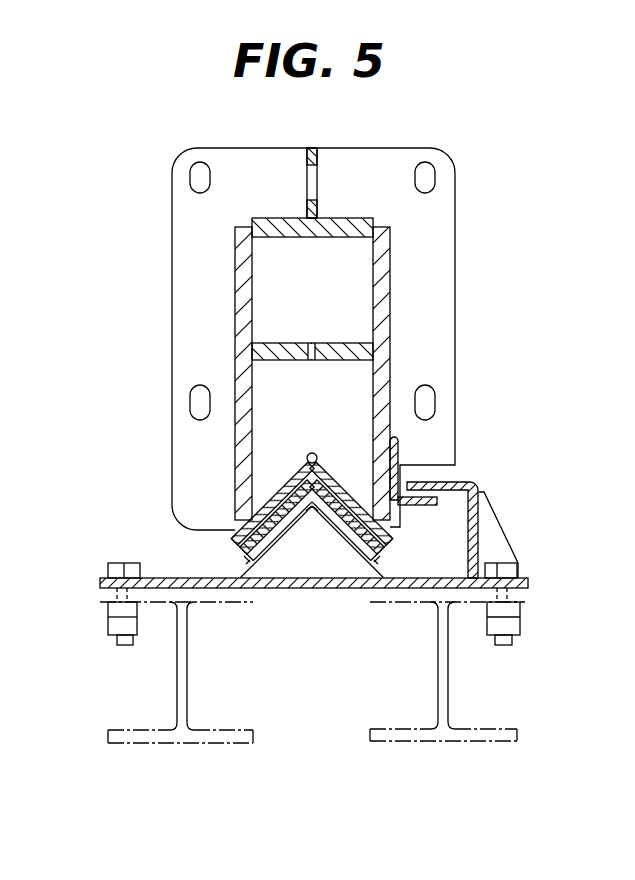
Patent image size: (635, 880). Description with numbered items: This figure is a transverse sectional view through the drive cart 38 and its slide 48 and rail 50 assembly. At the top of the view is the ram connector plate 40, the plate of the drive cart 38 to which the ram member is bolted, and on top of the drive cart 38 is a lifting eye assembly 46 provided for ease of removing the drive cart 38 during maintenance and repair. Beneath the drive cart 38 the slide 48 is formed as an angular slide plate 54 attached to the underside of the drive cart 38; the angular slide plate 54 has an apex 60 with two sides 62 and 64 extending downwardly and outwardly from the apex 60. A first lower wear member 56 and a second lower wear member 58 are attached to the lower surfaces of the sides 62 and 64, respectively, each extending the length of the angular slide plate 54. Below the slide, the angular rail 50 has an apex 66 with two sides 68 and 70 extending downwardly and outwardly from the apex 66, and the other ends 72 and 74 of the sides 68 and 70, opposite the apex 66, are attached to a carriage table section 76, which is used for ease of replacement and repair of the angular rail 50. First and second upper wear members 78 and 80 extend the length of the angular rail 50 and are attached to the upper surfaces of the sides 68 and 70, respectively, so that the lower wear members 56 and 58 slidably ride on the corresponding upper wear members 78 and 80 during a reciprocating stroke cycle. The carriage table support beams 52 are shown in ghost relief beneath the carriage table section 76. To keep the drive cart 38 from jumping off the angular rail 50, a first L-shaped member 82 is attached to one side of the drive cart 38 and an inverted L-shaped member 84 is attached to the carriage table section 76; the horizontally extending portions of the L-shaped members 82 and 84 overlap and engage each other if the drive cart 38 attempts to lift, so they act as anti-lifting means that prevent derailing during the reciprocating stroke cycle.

The drive cart 38 is at (392, 274).
The ram connector plate 40 is at (399, 150).
The lifting eye assembly 46 is at (318, 162).
The slide 48 is at (337, 462).
The angular rail 50 is at (329, 553).
The carriage table support beams 52 is at (214, 744).
The angular slide plate 54 is at (300, 490).
The first lower wear member 56 is at (235, 558).
The second lower wear member 58 is at (400, 555).
The apex 60 is at (305, 466).
The side 62 is at (292, 512).
The side 64 is at (388, 455).
The apex 66 is at (312, 515).
The side 68 is at (288, 565).
The side 70 is at (350, 565).
The end 72 is at (284, 524).
The end 74 is at (362, 588).
The carriage table section 76 is at (528, 586).
The first upper wear member 78 is at (238, 580).
The second upper wear member 80 is at (378, 578).
The first L-shaped member 82 is at (398, 447).
The inverted L-shaped member 84 is at (476, 485).